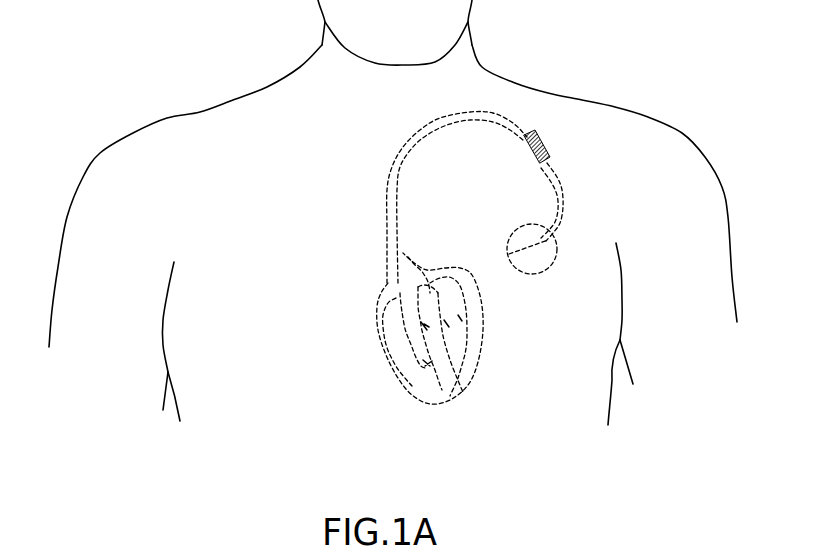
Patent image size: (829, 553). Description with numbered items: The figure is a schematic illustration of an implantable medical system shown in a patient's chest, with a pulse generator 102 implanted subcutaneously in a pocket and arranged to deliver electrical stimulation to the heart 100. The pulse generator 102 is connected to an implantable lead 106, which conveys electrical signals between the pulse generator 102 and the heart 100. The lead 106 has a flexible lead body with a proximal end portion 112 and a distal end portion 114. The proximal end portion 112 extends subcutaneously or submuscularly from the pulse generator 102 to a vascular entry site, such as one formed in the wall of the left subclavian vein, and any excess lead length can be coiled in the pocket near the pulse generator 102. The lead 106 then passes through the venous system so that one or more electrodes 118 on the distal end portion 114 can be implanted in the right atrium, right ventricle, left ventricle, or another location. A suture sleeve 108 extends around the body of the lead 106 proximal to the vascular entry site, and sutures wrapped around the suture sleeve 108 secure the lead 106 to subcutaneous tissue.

The heart 100 is at (462, 393).
The pulse generator 102 is at (550, 272).
The implantable lead 106 is at (410, 143).
The suture sleeve 108 is at (537, 137).
The proximal end portion 112 is at (568, 190).
The distal end portion 114 is at (403, 302).
The electrodes 118 is at (427, 362).